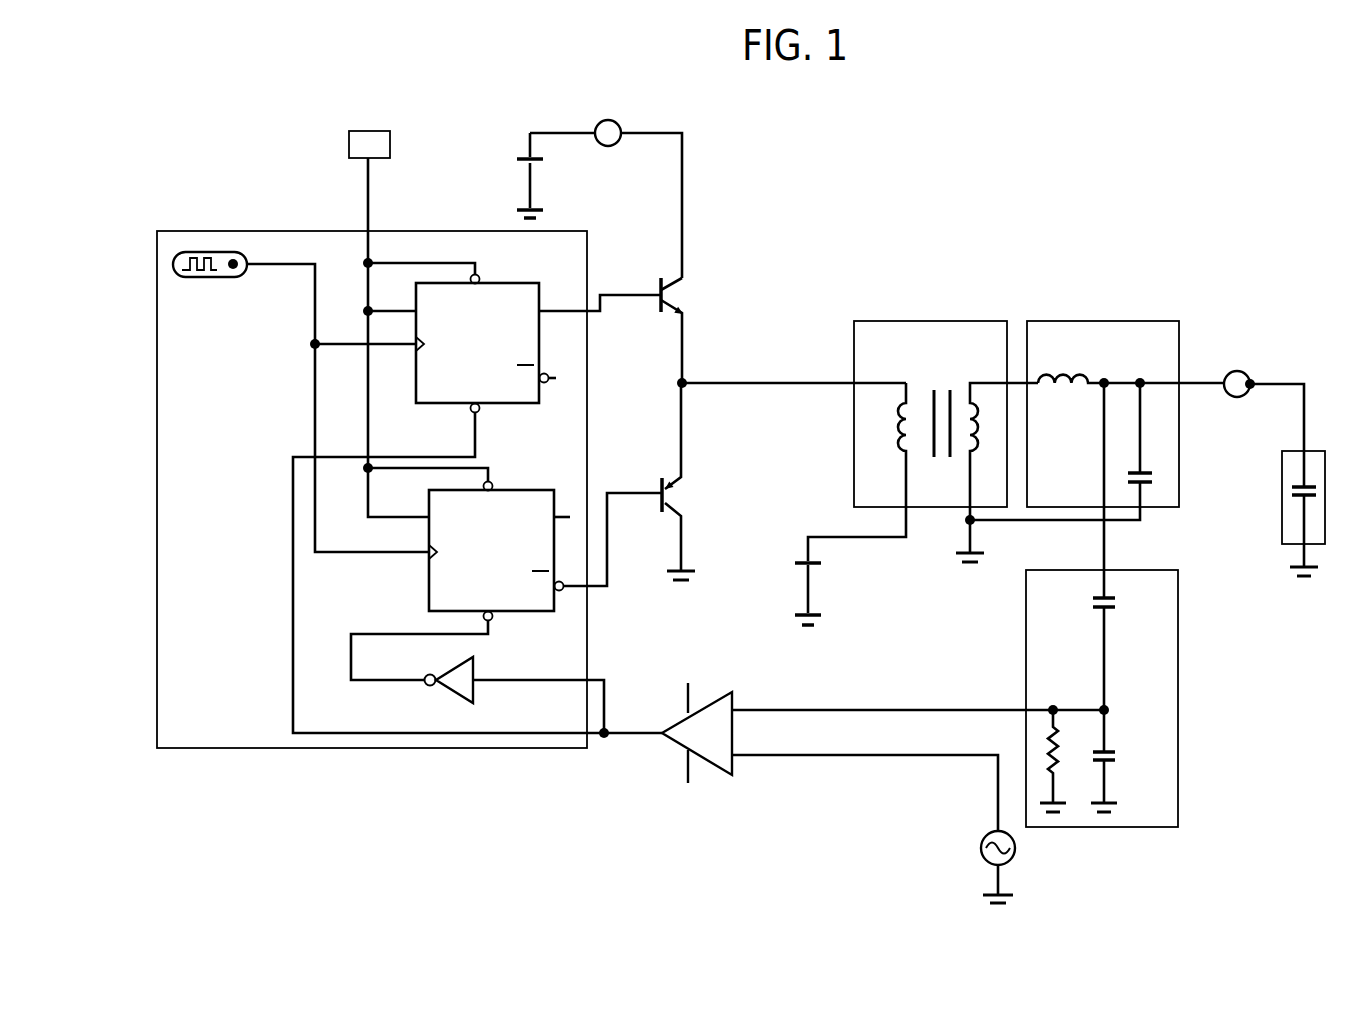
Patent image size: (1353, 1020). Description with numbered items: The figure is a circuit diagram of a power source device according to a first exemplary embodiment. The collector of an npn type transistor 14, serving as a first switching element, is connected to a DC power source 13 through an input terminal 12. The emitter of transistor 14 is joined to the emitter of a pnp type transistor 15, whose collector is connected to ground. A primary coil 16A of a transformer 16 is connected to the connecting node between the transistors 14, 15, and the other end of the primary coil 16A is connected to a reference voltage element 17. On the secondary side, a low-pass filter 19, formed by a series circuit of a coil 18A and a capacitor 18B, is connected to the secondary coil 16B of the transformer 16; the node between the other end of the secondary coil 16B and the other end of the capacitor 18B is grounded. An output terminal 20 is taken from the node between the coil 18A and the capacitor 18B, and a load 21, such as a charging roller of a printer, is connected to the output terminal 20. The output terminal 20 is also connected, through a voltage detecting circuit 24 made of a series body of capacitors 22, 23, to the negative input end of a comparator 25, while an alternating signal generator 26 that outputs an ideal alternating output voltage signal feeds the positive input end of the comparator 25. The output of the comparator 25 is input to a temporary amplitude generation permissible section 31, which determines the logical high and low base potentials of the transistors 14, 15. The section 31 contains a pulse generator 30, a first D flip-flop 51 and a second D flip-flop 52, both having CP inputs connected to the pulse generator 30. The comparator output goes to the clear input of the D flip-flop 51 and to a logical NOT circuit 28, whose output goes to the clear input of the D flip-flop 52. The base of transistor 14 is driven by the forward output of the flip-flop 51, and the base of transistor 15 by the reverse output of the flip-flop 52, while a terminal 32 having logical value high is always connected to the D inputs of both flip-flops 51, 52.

The input terminal 12 is at (613, 146).
The DC power source 13 is at (512, 163).
The npn type transistor 14 is at (684, 290).
The pnp type transistor 15 is at (682, 492).
The transformer 16 is at (923, 413).
The primary coil 16A is at (895, 403).
The secondary coil 16B is at (965, 403).
The reference voltage element 17 is at (797, 568).
The coil 18A is at (1065, 365).
The capacitor 18B is at (1163, 473).
The low-pass filter 19 is at (1114, 392).
The output terminal 20 is at (1243, 372).
The load 21 is at (1279, 513).
The capacitor 22 is at (1120, 603).
The capacitor 23 is at (1122, 758).
The voltage detecting circuit 24 is at (984, 605).
The comparator 25 is at (682, 745).
The alternating signal generator 26 is at (977, 847).
The logical NOT circuit 28 is at (452, 693).
The pulse generator 30 is at (216, 279).
The temporary amplitude generation permissible section 31 is at (219, 230).
The terminal 32 is at (349, 143).
The D flip-flop 51 is at (507, 282).
The D flip-flop 52 is at (506, 490).